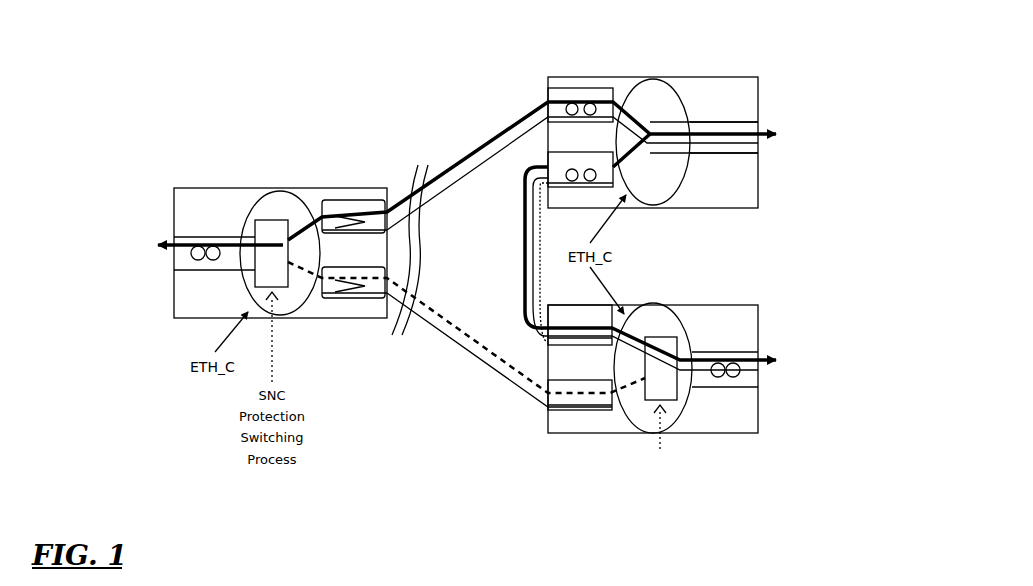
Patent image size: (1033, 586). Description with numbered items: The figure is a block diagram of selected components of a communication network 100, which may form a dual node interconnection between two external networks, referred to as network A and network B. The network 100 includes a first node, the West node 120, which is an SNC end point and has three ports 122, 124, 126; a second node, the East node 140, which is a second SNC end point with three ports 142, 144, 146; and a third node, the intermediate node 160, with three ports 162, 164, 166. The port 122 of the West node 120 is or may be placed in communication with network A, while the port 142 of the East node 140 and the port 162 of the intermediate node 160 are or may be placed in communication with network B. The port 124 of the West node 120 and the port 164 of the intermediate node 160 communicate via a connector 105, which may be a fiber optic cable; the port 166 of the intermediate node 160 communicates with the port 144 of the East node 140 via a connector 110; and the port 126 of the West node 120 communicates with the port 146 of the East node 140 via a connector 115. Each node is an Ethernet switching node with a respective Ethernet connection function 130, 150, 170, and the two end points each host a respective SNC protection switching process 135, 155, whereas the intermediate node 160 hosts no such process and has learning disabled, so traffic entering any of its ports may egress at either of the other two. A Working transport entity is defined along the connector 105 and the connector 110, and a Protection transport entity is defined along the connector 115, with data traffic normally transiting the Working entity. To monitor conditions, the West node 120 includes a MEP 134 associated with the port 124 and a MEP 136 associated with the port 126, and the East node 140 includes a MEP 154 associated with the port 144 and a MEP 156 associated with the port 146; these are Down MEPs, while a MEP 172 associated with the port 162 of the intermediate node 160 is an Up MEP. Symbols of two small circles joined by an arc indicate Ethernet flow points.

The communication network 100 is at (190, 64).
The connector 105 is at (505, 131).
The connector 110 is at (525, 197).
The connector 115 is at (512, 384).
The West node 120 is at (174, 200).
The port 122 is at (198, 272).
The port 124 is at (360, 200).
The port 126 is at (316, 315).
The Ethernet connection function 130 is at (240, 297).
The MEP 134 is at (330, 199).
The SNC protection switching process 135 is at (262, 228).
The MEP 136 is at (345, 287).
The East node 140 is at (758, 312).
The port 142 is at (728, 352).
The port 144 is at (565, 318).
The port 146 is at (547, 413).
The Ethernet connection function 150 is at (629, 309).
The MEP 154 is at (594, 347).
The SNC protection switching process 155 is at (668, 400).
The MEP 156 is at (597, 405).
The intermediate node 160 is at (758, 92).
The port 162 is at (712, 143).
The port 164 is at (562, 88).
The port 166 is at (558, 187).
The Ethernet connection function 170 is at (687, 100).
The MEP 172 is at (744, 145).